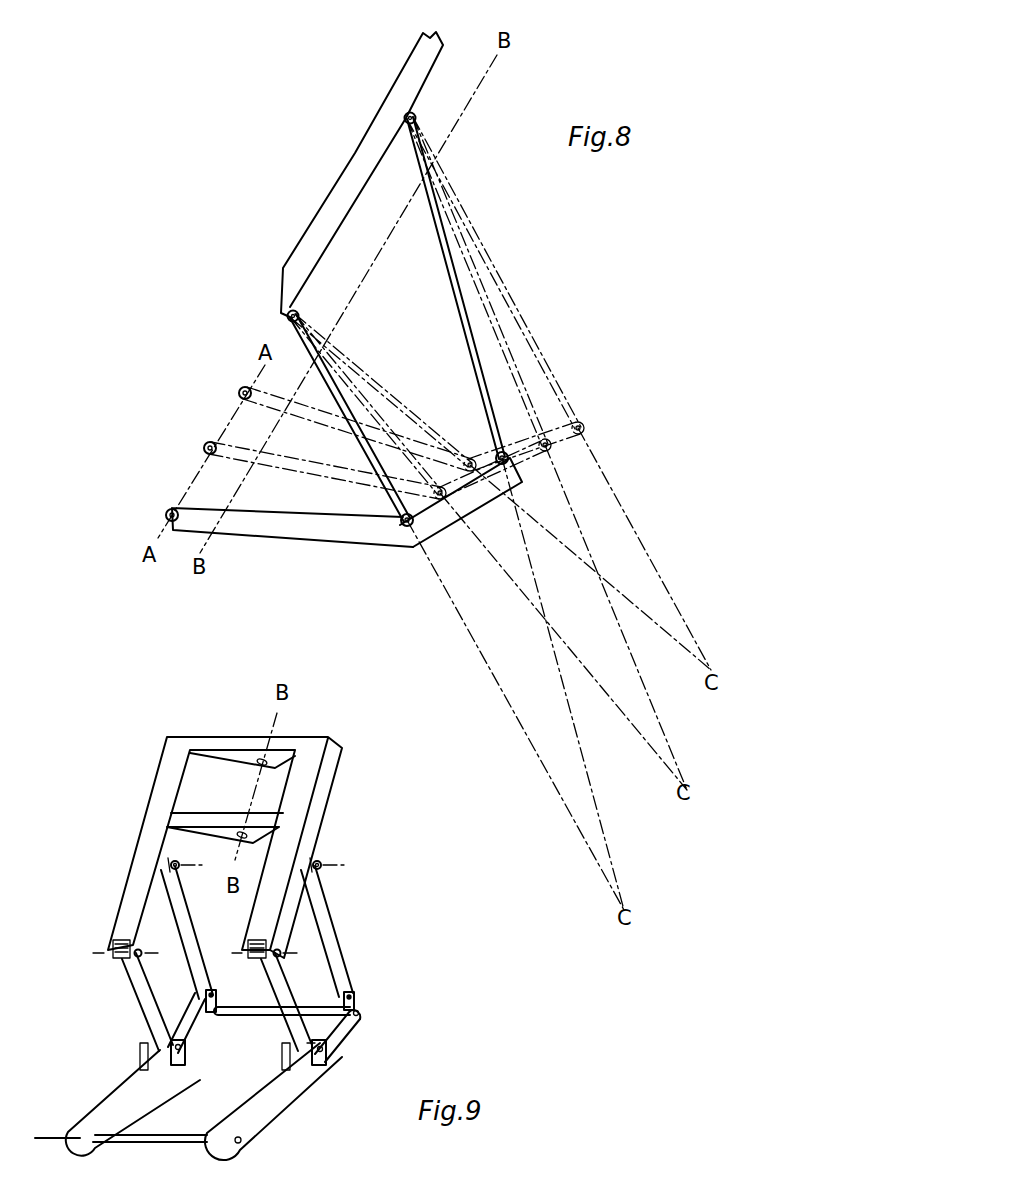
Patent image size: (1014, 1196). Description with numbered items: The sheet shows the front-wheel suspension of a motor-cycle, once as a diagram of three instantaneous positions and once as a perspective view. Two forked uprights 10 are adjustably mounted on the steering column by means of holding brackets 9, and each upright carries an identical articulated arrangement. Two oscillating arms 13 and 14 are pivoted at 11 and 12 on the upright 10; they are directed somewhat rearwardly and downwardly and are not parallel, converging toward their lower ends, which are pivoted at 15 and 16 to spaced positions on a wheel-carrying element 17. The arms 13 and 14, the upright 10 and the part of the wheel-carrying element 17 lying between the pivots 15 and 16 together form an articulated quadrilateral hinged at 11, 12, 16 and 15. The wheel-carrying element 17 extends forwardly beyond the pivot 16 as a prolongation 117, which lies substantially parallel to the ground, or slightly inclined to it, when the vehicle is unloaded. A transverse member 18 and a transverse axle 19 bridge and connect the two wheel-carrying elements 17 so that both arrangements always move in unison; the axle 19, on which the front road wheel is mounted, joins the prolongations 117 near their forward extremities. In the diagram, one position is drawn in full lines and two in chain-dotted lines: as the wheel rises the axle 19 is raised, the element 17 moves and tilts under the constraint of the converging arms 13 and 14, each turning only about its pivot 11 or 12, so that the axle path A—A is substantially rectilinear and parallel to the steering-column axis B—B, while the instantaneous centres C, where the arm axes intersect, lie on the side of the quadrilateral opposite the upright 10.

In FIG. 9, the holding bracket 9 is at (220, 742).
In FIG. 8, the forked upright 10 is at (371, 127).
In FIG. 9, the forked upright 10 is at (157, 780).
In FIG. 8, the pivot of oscillating arm 11 is at (415, 114).
In FIG. 9, the pivot of oscillating arm 11 is at (179, 866).
In FIG. 8, the pivot of oscillating arm 12 is at (299, 311).
In FIG. 9, the pivot of oscillating arm 12 is at (135, 957).
In FIG. 8, the oscillating arm 13 is at (452, 250).
In FIG. 9, the oscillating arm 13 is at (183, 907).
In FIG. 8, the oscillating arm 14 is at (352, 410).
In FIG. 9, the oscillating arm 14 is at (136, 1005).
In FIG. 8, the pivot 15 is at (507, 454).
In FIG. 9, the pivot 15 is at (213, 996).
In FIG. 8, the pivot 16 is at (473, 472).
In FIG. 9, the pivot 16 is at (182, 1050).
In FIG. 8, the wheel-carrying element 17 is at (583, 455).
In FIG. 9, the wheel-carrying element 17 is at (175, 1005).
In FIG. 9, the transverse member 18 is at (266, 1015).
In FIG. 8, the transverse axle 19 is at (241, 388).
In FIG. 9, the transverse axle 19 is at (183, 1134).
In FIG. 8, the prolongation of wheel-carrying element 117 is at (330, 436).
In FIG. 9, the prolongation of wheel-carrying element 117 is at (122, 1097).